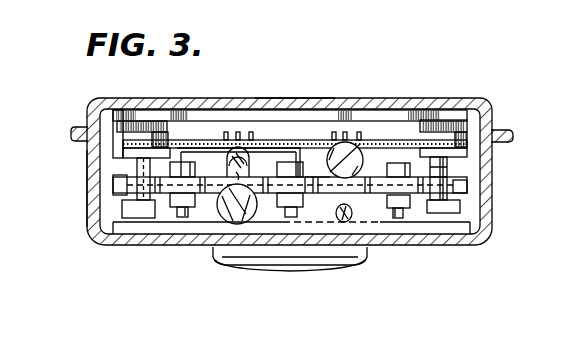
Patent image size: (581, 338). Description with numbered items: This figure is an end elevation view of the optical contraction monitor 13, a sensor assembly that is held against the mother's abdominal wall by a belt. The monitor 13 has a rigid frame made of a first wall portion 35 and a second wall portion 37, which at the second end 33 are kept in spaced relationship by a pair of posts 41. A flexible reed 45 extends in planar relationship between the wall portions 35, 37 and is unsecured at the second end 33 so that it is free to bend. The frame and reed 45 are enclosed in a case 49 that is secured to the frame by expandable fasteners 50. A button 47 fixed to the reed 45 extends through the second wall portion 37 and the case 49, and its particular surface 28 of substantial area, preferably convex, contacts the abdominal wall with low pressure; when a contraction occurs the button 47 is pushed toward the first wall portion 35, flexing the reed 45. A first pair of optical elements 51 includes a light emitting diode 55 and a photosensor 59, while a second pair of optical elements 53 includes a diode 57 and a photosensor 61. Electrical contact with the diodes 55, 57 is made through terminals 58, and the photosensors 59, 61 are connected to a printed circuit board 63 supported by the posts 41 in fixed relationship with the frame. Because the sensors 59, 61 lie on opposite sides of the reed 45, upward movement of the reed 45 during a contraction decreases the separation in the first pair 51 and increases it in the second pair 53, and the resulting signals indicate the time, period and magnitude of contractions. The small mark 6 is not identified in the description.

The fastening screws 6 is at (183, 214).
The optical contraction monitor 13 is at (275, 75).
The particular surface 28 is at (297, 271).
The second end 33 is at (313, 96).
The first wall portion 35 is at (402, 117).
The second wall portion 37 is at (379, 230).
The posts 41 is at (132, 157).
The reed 45 is at (122, 188).
The button 47 is at (306, 257).
The case 49 is at (84, 223).
The expandable fasteners 50 is at (190, 97).
The first pair of optical elements 51 is at (314, 160).
The second pair of optical elements 53 is at (202, 212).
The light emitting diode 55 is at (346, 224).
The diode 57 is at (240, 147).
The terminals 58 is at (178, 200).
The photosensor 59 is at (360, 143).
The photosensor 61 is at (242, 226).
The printed circuit board 63 is at (432, 142).